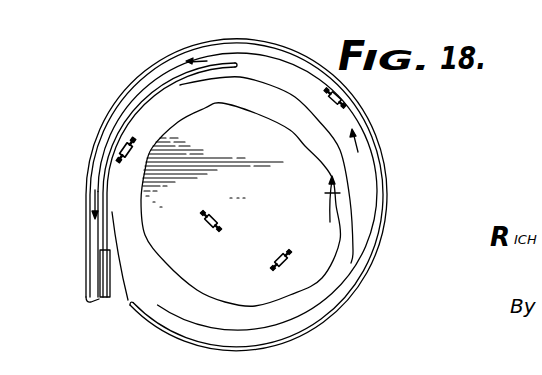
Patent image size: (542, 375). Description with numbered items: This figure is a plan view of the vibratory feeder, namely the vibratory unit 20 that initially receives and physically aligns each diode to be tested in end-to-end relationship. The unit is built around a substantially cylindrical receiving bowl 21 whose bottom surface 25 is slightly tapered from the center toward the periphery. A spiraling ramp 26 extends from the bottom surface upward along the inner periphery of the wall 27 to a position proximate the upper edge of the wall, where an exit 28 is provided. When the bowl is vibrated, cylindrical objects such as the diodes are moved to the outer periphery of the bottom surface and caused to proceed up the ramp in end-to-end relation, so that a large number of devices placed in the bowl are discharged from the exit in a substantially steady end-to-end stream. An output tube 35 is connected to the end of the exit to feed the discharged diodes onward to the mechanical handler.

The vibratory unit 20 is at (393, 145).
The bowl 21 is at (284, 27).
The bottom surface 25 is at (283, 178).
The spiraling ramp 26 is at (285, 69).
The wall 27 is at (385, 195).
The exit 28 is at (99, 262).
The output tube 35 is at (89, 300).